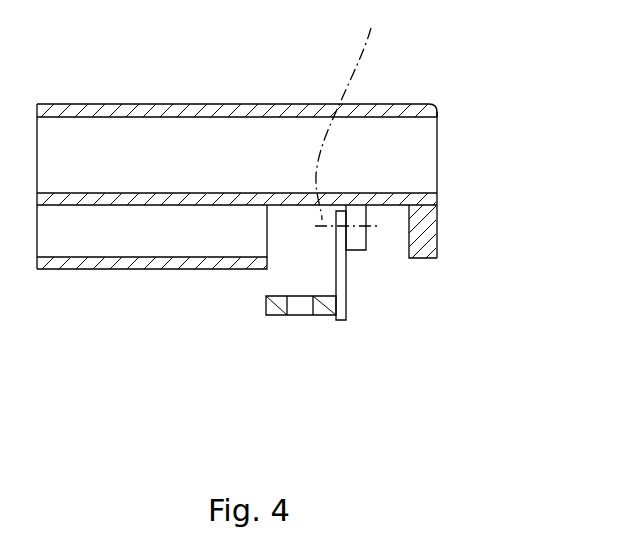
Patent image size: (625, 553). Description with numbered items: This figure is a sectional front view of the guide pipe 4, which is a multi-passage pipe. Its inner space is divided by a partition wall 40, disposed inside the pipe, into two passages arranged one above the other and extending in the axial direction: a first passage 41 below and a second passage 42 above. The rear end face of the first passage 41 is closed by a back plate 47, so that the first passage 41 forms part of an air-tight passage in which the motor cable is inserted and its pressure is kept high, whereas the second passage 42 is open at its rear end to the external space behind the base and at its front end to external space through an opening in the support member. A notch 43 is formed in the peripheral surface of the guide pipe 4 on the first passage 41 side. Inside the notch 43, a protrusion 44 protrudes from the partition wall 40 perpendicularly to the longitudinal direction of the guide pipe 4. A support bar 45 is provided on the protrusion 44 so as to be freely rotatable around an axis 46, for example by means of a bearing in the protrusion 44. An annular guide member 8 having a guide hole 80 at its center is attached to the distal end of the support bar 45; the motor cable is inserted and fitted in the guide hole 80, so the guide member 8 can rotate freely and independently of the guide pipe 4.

The guide pipe 4 is at (141, 103).
The partition wall 40 is at (273, 192).
The first passage 41 is at (155, 246).
The second passage 42 is at (392, 158).
The notch 43 is at (373, 262).
The protrusion 44 is at (357, 238).
The support bar 45 is at (346, 303).
The axis 46 is at (350, 113).
The back plate 47 is at (423, 210).
The guide member 8 is at (266, 306).
The guide hole 80 is at (287, 316).